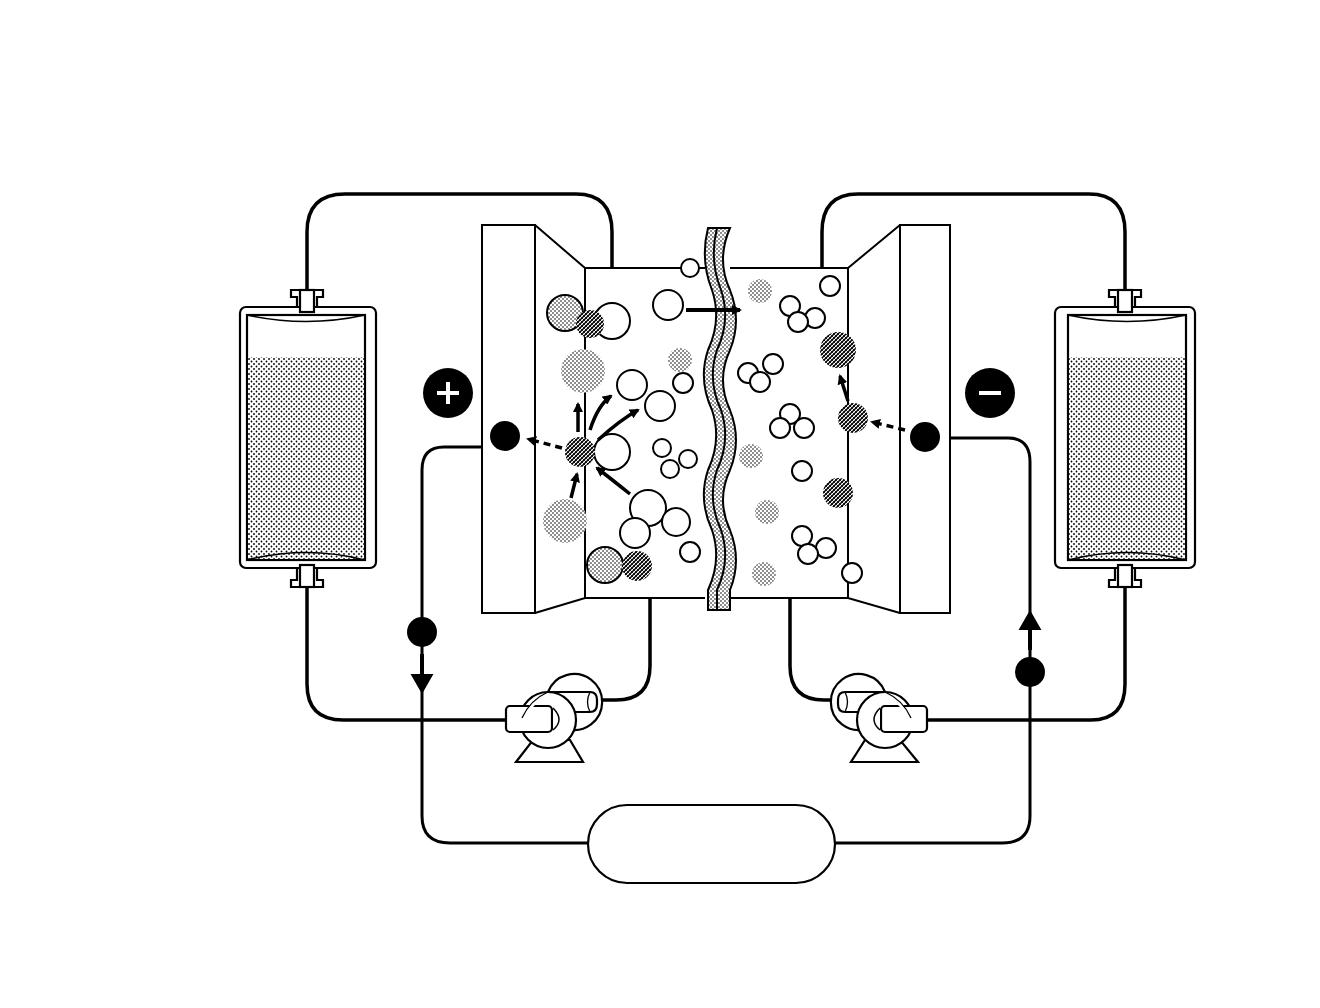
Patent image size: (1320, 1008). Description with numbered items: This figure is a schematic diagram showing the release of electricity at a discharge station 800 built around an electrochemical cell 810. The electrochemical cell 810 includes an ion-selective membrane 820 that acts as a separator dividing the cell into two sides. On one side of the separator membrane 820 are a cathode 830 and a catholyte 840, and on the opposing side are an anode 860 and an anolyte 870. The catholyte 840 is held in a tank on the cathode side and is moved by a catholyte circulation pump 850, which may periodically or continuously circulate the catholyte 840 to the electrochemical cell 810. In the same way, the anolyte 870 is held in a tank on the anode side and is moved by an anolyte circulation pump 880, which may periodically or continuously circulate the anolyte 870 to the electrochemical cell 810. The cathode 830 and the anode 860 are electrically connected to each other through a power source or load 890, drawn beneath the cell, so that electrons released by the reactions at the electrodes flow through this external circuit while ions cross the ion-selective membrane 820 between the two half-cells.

The discharge station 800 is at (966, 118).
The electrochemical cell 810 is at (791, 260).
The ion-selective membrane 820 is at (717, 228).
The cathode 830 is at (481, 281).
The catholyte 840 is at (258, 305).
The catholyte circulation pump 850 is at (531, 763).
The anode 860 is at (951, 301).
The anolyte 870 is at (1194, 343).
The anolyte circulation pump 880 is at (888, 763).
The power source or load 890 is at (685, 805).